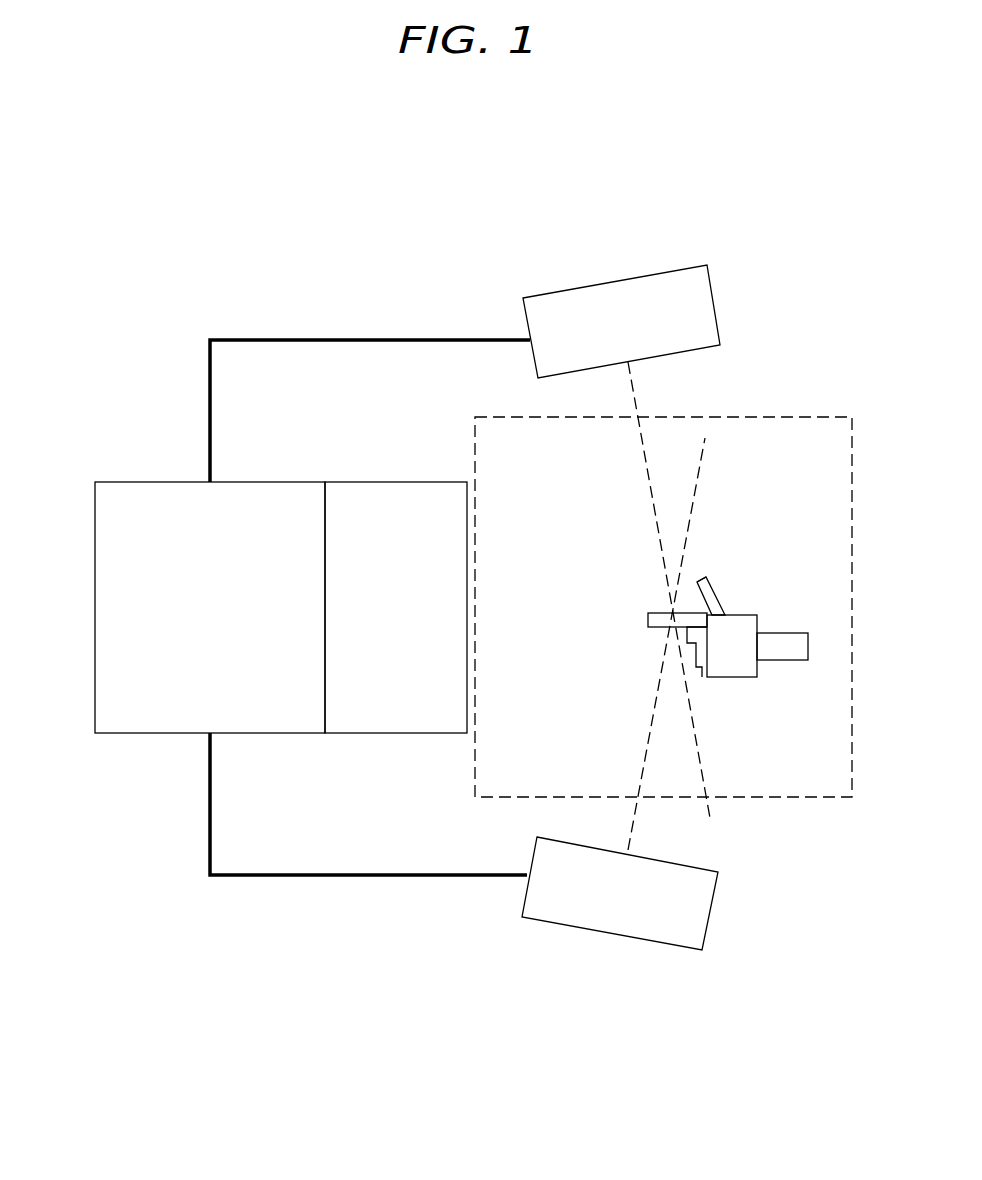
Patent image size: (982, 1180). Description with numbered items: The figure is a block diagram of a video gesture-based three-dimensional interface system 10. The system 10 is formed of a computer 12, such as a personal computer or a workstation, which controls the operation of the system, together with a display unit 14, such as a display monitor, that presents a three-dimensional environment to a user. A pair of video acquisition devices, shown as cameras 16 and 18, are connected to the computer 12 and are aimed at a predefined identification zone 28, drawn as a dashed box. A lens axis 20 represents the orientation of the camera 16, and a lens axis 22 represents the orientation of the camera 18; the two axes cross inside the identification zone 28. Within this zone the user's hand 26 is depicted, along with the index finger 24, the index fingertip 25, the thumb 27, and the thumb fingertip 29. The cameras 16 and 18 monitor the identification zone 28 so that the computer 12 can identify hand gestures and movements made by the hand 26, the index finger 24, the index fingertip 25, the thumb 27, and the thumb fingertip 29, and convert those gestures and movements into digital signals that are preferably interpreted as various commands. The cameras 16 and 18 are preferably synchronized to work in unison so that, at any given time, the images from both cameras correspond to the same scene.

The video gesture-based three-dimensional interface system 10 is at (221, 238).
The computer 12 is at (95, 607).
The display unit 14 is at (396, 481).
The camera 16 is at (616, 283).
The camera 18 is at (612, 935).
The lens axis 20 is at (700, 768).
The lens axis 22 is at (692, 508).
The index finger 24 is at (682, 622).
The index fingertip 25 is at (648, 620).
The hand 26 is at (733, 677).
The thumb 27 is at (717, 598).
The identification zone 28 is at (852, 608).
The thumb fingertip 29 is at (702, 578).